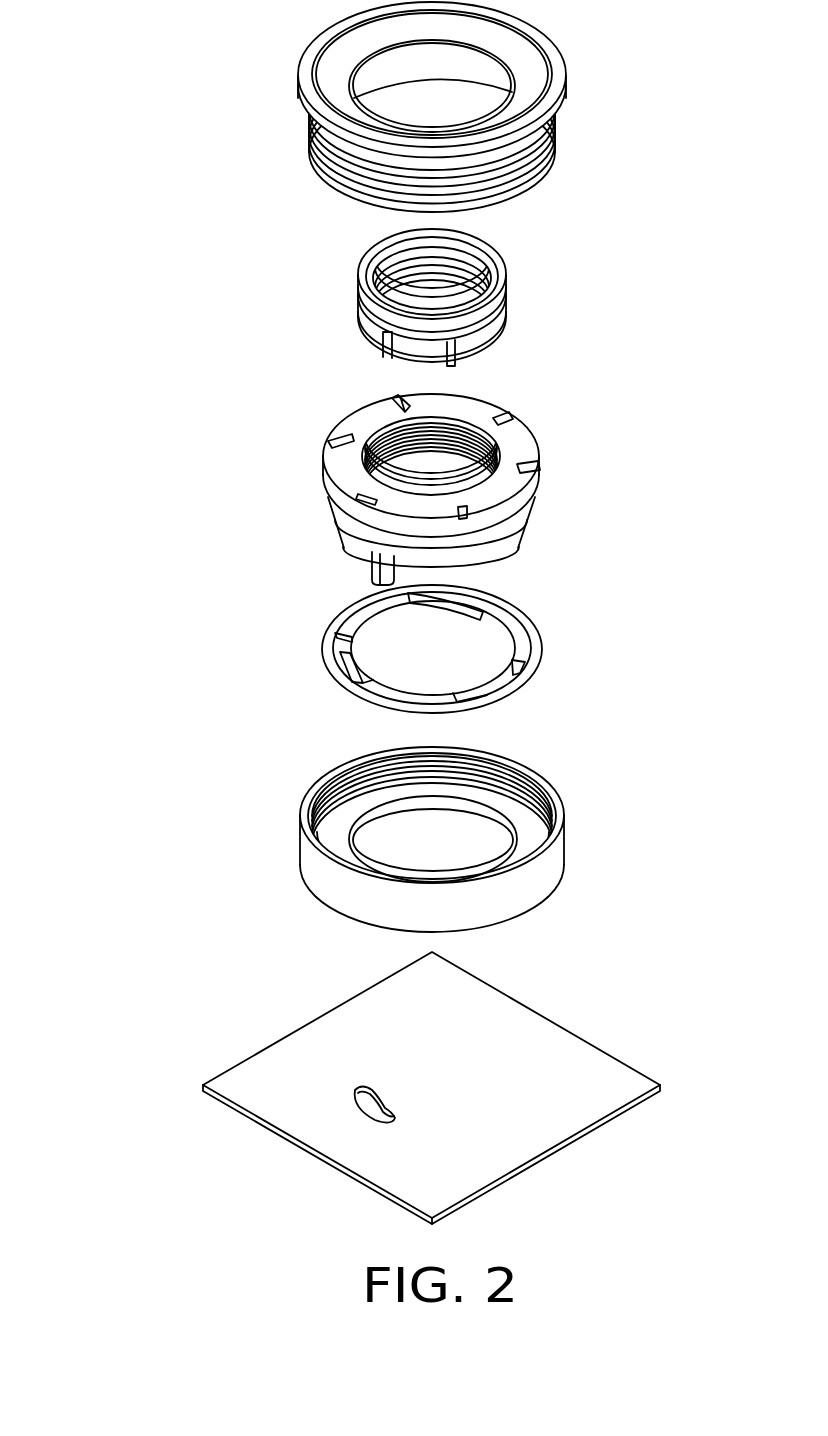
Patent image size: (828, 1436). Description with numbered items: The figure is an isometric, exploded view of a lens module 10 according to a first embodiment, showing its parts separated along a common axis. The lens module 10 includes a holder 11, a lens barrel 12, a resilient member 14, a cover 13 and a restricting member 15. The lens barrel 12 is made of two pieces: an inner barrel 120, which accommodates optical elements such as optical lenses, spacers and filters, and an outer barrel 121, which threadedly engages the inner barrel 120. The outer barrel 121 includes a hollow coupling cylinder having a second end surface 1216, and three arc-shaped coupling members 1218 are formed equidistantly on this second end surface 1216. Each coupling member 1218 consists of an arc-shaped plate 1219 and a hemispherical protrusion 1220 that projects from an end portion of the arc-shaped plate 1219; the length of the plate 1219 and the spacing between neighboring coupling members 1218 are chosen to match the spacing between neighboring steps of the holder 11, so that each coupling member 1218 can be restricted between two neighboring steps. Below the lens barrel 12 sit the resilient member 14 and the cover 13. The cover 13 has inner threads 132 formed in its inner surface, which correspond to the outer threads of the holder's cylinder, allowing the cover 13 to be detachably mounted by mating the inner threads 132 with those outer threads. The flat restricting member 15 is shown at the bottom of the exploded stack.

The lens module 10 is at (166, 60).
The holder 11 is at (562, 107).
The lens barrel 12 is at (619, 303).
The inner barrel 120 is at (507, 303).
The outer barrel 121 is at (407, 471).
The second end surface 1216 is at (342, 473).
The coupling member 1218 is at (305, 403).
The arc-shaped plate 1219 is at (357, 422).
The hemispherical protrusion 1220 is at (394, 396).
The cover 13 is at (438, 837).
The inner threads 132 is at (347, 785).
The resilient member 14 is at (527, 633).
The restricting member 15 is at (598, 1068).